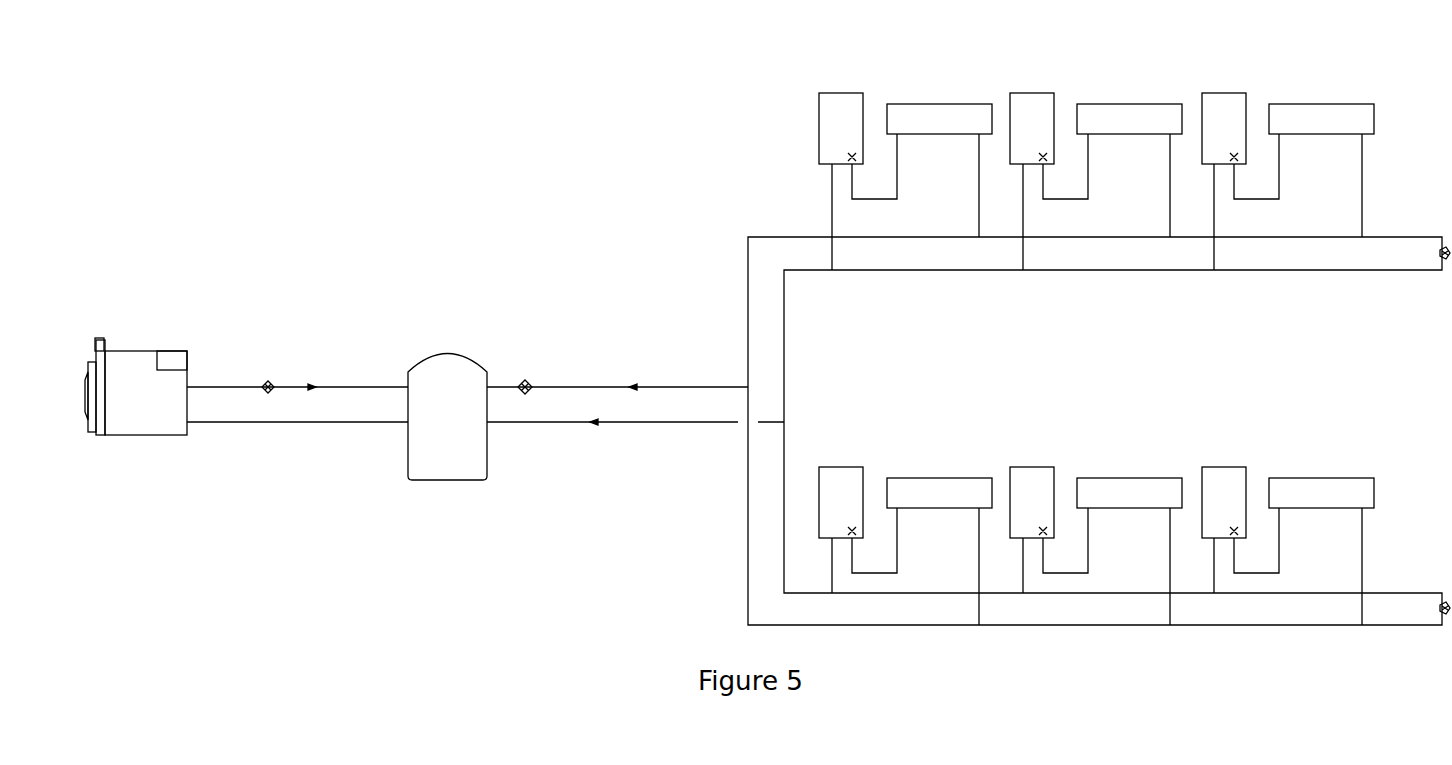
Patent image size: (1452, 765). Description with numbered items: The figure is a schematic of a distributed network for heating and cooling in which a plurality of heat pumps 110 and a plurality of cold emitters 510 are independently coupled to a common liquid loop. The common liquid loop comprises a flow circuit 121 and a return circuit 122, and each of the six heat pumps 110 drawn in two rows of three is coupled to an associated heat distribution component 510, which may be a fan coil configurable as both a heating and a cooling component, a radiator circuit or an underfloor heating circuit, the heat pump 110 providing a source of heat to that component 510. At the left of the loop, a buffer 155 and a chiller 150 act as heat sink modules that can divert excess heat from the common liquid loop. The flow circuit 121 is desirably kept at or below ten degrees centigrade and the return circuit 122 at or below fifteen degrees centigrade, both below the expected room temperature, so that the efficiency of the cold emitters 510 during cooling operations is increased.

The heat pump 110 is at (836, 110).
The flow circuit 121 is at (596, 385).
The return circuit 122 is at (614, 426).
The chiller 150 is at (132, 362).
The buffer 155 is at (447, 374).
The cold emitter 510 is at (932, 127).